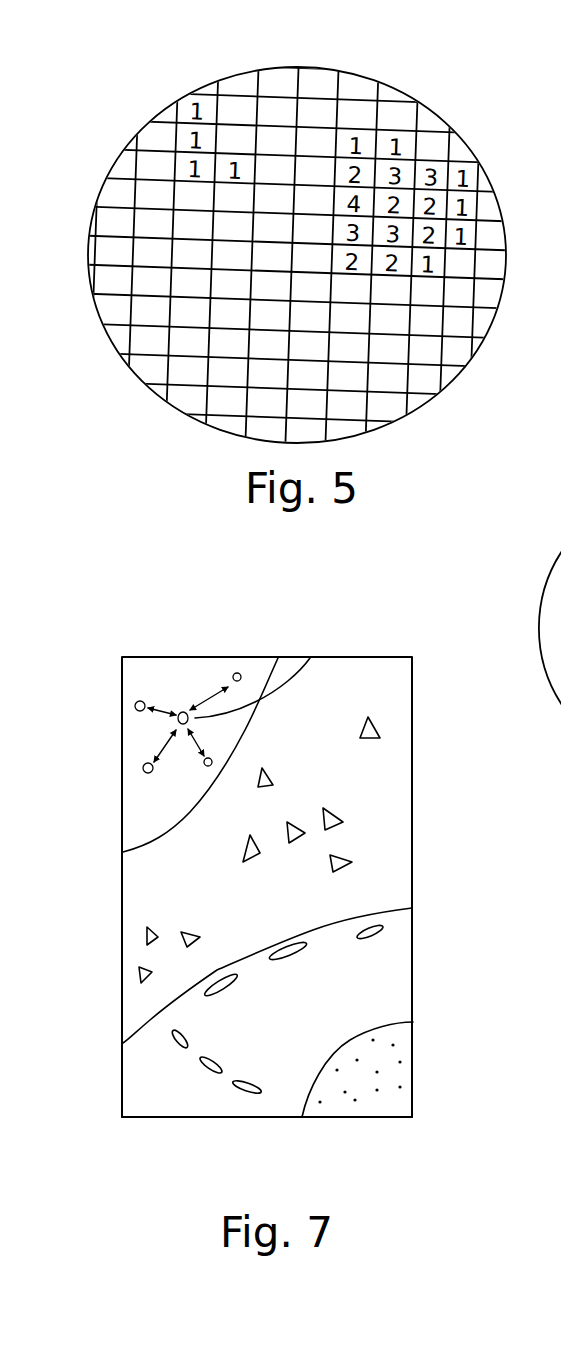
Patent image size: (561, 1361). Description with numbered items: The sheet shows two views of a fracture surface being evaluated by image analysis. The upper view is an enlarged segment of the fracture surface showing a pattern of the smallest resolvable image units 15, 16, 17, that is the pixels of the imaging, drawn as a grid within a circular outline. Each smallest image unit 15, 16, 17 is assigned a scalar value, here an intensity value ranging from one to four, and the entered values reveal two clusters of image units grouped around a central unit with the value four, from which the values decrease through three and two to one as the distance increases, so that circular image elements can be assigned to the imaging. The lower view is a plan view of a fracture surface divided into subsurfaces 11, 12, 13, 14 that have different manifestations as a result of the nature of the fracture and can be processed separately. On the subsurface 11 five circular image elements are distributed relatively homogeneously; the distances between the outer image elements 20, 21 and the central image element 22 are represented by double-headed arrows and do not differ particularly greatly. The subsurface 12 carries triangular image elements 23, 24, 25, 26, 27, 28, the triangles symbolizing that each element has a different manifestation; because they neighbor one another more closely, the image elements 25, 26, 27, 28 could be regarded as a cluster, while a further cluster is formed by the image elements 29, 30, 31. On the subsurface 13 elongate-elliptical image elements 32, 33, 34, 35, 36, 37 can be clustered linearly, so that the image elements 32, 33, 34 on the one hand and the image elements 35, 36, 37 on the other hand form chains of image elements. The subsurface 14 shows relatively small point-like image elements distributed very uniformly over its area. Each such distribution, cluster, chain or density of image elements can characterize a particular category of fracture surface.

In FIG. 5, the smallest resolvable image unit 15 is at (235, 73).
In FIG. 5, the smallest resolvable image unit 16 is at (282, 68).
In FIG. 5, the smallest resolvable image unit 17 is at (310, 68).
In FIG. 7, the subsurface 11 is at (133, 800).
In FIG. 7, the subsurface 12 is at (140, 893).
In FIG. 7, the subsurface 13 is at (137, 1072).
In FIG. 7, the subsurface 14 is at (419, 1090).
In FIG. 7, the outer image element 20 is at (141, 701).
In FIG. 7, the outer image element 21 is at (243, 673).
In FIG. 7, the central image element 22 is at (278, 658).
In FIG. 7, the image element 23 is at (273, 767).
In FIG. 7, the image element 24 is at (381, 724).
In FIG. 7, the image element 25 is at (343, 813).
In FIG. 7, the image element 26 is at (353, 853).
In FIG. 7, the image element 27 is at (295, 843).
In FIG. 7, the image element 28 is at (243, 852).
In FIG. 7, the image element 29 is at (144, 936).
In FIG. 7, the image element 30 is at (138, 975).
In FIG. 7, the image element 31 is at (194, 934).
In FIG. 7, the elongate-elliptical image element 32 is at (230, 997).
In FIG. 7, the elongate-elliptical image element 33 is at (297, 960).
In FIG. 7, the elongate-elliptical image element 34 is at (373, 940).
In FIG. 7, the elongate-elliptical image element 35 is at (173, 1043).
In FIG. 7, the elongate-elliptical image element 36 is at (217, 1077).
In FIG. 7, the elongate-elliptical image element 37 is at (248, 1097).